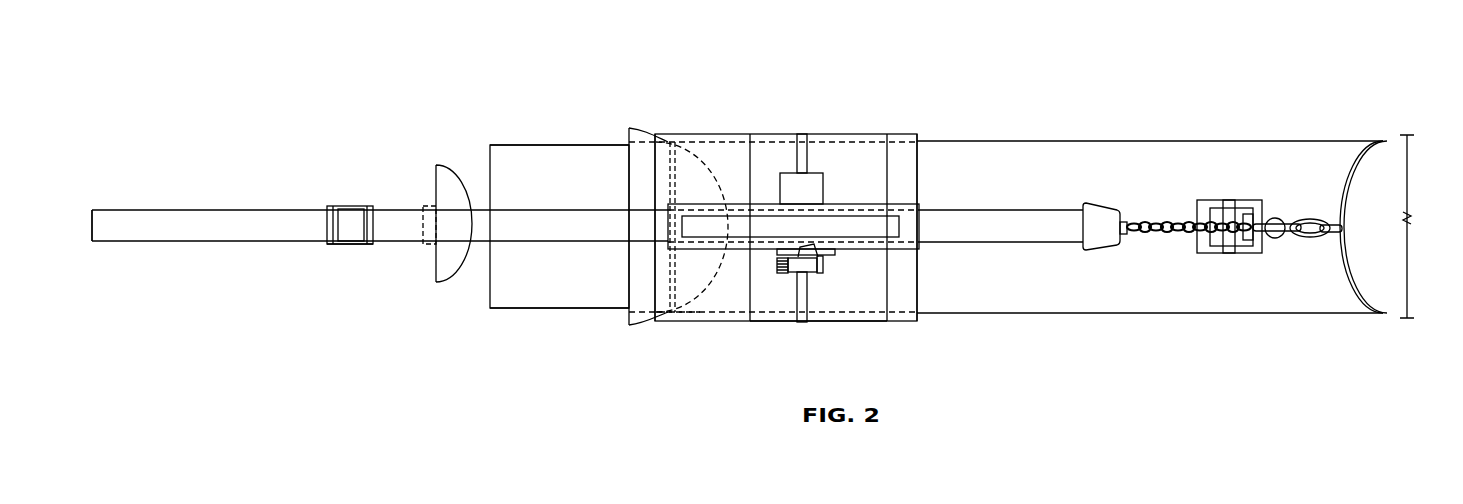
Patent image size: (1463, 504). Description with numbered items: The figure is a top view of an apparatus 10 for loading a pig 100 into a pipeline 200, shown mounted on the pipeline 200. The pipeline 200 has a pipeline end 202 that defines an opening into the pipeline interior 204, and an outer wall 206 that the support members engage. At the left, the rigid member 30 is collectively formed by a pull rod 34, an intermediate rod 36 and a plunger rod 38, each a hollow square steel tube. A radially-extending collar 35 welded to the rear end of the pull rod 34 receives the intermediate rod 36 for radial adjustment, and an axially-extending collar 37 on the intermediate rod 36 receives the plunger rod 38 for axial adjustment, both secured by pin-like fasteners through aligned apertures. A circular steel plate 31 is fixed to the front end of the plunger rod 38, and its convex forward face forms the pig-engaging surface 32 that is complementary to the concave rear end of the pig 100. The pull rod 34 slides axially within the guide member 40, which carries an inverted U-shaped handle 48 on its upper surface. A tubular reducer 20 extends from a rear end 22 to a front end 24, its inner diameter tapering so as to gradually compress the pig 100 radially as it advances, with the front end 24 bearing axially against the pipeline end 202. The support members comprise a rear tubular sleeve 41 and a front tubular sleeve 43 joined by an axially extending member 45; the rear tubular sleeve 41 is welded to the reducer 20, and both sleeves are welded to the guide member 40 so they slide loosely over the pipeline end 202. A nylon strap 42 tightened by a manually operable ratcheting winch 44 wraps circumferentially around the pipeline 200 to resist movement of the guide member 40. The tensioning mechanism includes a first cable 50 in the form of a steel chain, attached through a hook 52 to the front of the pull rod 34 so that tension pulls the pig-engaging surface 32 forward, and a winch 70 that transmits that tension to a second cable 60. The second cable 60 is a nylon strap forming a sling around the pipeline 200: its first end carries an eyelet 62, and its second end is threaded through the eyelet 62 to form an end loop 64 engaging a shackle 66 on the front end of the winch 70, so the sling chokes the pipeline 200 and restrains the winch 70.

The apparatus 10 is at (262, 133).
The rigid member 30 is at (247, 210).
The plunger rod 38 is at (197, 243).
The radially-extending collar 35 is at (327, 224).
The intermediate rod 36 is at (352, 207).
The axially-extending collar 37 is at (340, 245).
The circular steel plate 31 is at (435, 270).
The pig-engaging surface 32 is at (459, 270).
The pig 100 is at (490, 152).
The pull rod 34 is at (514, 206).
The tubular reducer 20 is at (629, 329).
The rear end 22 is at (628, 320).
The front end 24 is at (672, 318).
The pipeline end 202 is at (679, 306).
The guide member 40 is at (903, 202).
The rear tubular sleeve 41 is at (737, 322).
The front tubular sleeve 43 is at (906, 322).
The axially extending member 45 is at (852, 322).
The inverted U-shaped handle 48 is at (846, 205).
The ratcheting winch 44 is at (830, 263).
The nylon strap 42 is at (812, 291).
The pipeline 200 is at (1152, 315).
The outer wall 206 is at (1098, 289).
The hook 52 is at (1132, 217).
The first cable 50 is at (1175, 218).
The winch 70 is at (1213, 200).
The shackle 66 is at (1278, 216).
The end loop 64 is at (1314, 220).
The eyelet 62 is at (1346, 227).
The second cable 60 is at (1370, 279).
The pipeline interior 204 is at (1402, 182).